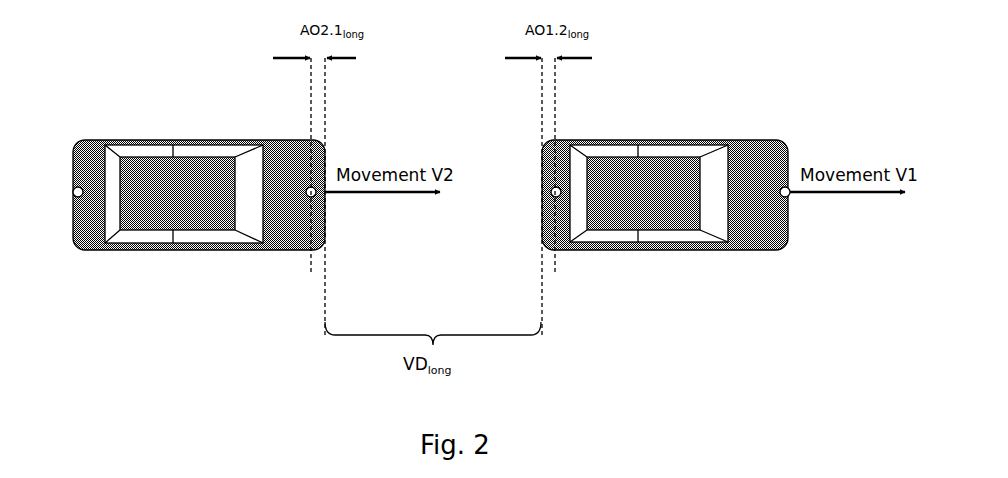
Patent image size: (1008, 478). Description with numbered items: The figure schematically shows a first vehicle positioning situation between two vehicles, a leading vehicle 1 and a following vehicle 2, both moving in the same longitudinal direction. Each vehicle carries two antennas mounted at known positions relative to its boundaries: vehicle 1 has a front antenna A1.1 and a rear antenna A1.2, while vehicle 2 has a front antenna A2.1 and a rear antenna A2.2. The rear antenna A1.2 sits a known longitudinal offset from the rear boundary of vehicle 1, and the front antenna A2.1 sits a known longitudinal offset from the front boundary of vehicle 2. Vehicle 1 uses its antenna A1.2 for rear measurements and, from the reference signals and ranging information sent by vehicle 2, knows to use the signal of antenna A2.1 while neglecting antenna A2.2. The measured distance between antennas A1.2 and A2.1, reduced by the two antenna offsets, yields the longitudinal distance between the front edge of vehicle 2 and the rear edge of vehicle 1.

The vehicle 1 is at (643, 140).
The vehicle 2 is at (171, 140).
The antenna A1.1 is at (784, 197).
The antenna A1.2 is at (553, 197).
The antenna A2.1 is at (310, 197).
The antenna A2.2 is at (76, 197).